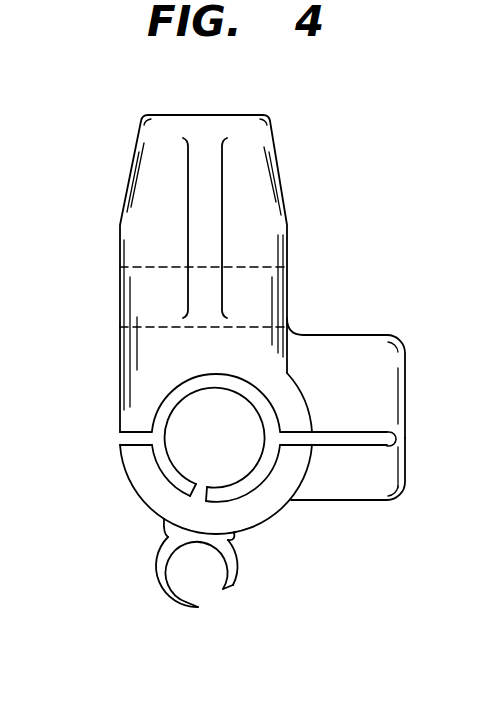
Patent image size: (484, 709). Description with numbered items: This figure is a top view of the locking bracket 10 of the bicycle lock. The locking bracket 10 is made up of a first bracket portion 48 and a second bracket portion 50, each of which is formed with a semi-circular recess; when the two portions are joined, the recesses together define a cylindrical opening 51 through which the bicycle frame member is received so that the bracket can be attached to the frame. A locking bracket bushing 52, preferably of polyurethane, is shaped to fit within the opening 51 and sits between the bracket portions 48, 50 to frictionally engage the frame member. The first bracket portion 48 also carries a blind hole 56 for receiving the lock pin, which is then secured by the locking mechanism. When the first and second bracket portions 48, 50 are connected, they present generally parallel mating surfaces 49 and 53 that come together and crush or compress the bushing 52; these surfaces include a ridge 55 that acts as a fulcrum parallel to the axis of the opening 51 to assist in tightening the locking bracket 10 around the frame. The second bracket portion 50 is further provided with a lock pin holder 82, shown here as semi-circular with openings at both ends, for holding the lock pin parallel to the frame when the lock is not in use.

The locking bracket 10 is at (289, 182).
The first bracket portion 48 is at (173, 228).
The blind hole 56 is at (142, 302).
The locking bracket bushing 52 is at (132, 437).
The ridge 55 is at (402, 440).
The mating surface 49 is at (367, 433).
The mating surface 53 is at (365, 457).
The second bracket portion 50 is at (152, 487).
The opening 51 is at (230, 449).
The lock pin holder 82 is at (165, 597).